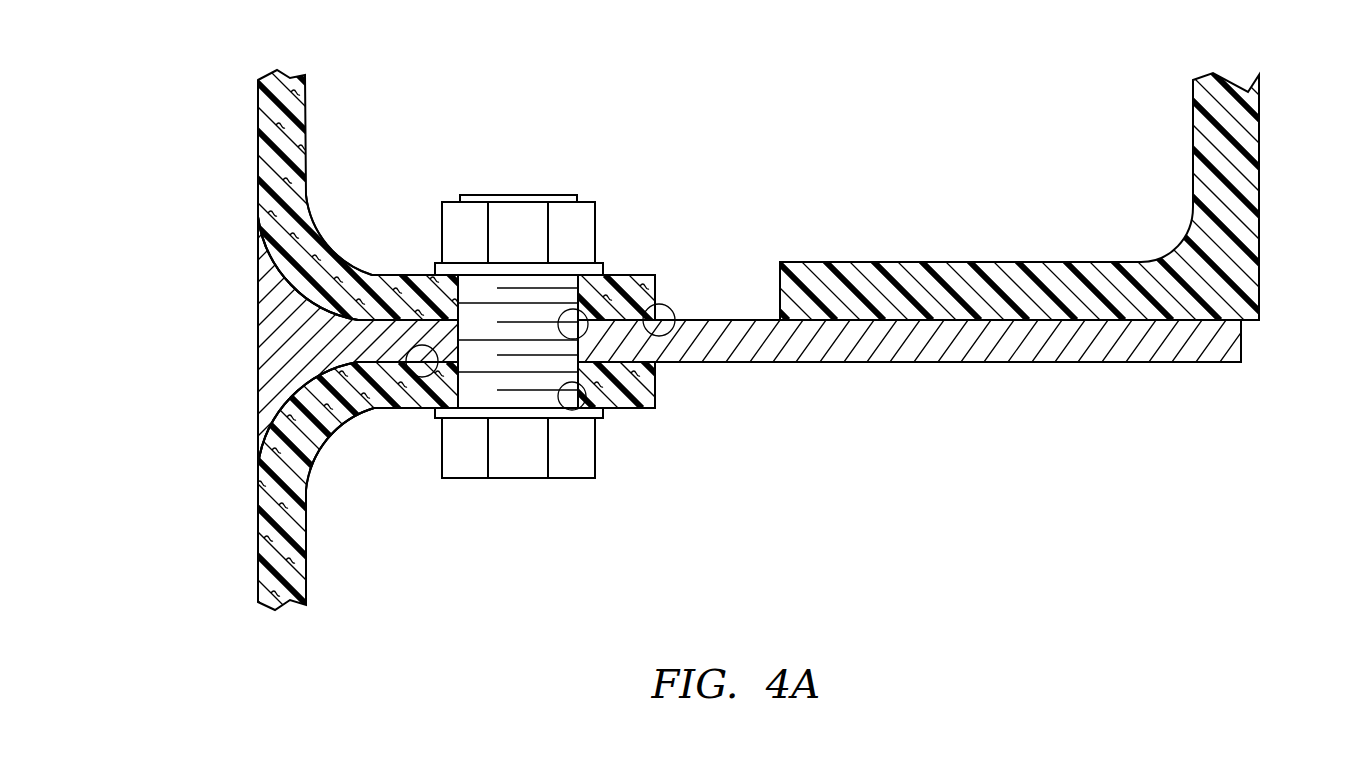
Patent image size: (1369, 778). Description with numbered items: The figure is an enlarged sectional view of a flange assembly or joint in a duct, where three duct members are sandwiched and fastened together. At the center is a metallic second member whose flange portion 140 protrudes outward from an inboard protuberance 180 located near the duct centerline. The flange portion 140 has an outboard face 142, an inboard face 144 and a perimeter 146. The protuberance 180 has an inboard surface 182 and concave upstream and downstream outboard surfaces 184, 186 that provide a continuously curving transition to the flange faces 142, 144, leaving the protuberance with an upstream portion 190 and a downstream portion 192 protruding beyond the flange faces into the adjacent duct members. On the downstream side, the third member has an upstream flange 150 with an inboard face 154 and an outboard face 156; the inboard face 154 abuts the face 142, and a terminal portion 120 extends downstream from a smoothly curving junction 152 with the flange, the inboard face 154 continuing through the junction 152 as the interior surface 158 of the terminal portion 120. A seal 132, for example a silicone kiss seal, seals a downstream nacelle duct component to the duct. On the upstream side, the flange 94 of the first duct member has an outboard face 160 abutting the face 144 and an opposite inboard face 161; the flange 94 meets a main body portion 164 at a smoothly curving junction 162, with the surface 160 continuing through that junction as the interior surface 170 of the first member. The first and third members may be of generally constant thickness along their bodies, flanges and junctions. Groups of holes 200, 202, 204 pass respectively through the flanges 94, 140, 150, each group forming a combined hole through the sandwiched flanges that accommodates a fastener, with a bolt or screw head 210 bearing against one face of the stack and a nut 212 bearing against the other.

The flange 94 is at (652, 393).
The terminal portion 120 is at (303, 104).
The seal 132 is at (1255, 178).
The flange portion 140 is at (875, 337).
The outboard face 142 is at (797, 317).
The inboard face 144 is at (797, 363).
The perimeter 146 is at (1242, 338).
The upstream flange 150 is at (655, 290).
The junction 152 is at (354, 221).
The inboard face 154 is at (672, 311).
The outboard face 156 is at (633, 273).
The interior surface 158 is at (258, 128).
The outboard face 160 is at (421, 378).
The inboard face 161 is at (637, 408).
The junction 162 is at (359, 451).
The main body portion 164 is at (258, 588).
The interior surface 170 is at (258, 533).
The protuberance 180 is at (287, 347).
The inboard surface 182 is at (262, 412).
The upstream outboard surface 184 is at (312, 457).
The downstream outboard surface 186 is at (325, 281).
The upstream portion 190 is at (263, 432).
The downstream portion 192 is at (268, 262).
The hole 200 is at (578, 409).
The hole 202 is at (583, 313).
The hole 204 is at (478, 293).
The bolt or screw head 210 is at (531, 468).
The nut 212 is at (532, 218).